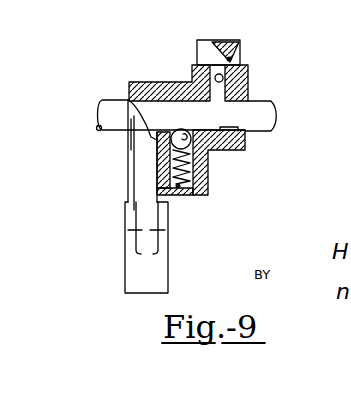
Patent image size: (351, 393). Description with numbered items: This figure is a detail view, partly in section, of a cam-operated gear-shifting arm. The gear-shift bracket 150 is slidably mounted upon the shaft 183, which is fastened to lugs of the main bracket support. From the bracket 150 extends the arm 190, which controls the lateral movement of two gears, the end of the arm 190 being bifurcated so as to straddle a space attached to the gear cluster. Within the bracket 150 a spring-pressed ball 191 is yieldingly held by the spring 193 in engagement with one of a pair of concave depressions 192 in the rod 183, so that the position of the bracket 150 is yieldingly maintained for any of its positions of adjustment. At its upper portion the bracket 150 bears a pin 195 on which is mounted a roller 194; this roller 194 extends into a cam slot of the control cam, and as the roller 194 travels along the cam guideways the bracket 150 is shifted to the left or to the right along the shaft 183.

The gear-shift bracket 150 is at (209, 176).
The shaft 183 is at (262, 106).
The extending arm 190 is at (141, 268).
The spring-pressed ball 191 is at (158, 147).
The concave depression 192 is at (223, 128).
The spring 193 is at (160, 168).
The roller 194 is at (234, 56).
The pin 195 is at (220, 42).